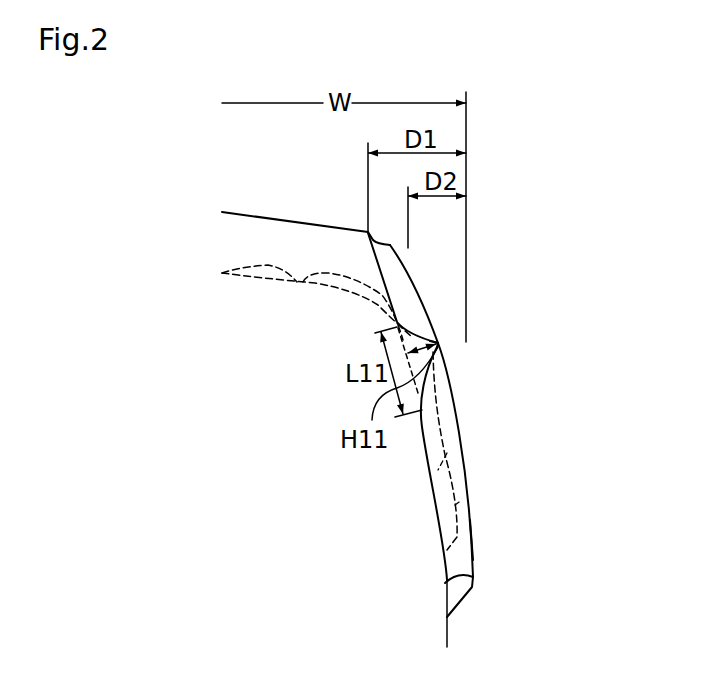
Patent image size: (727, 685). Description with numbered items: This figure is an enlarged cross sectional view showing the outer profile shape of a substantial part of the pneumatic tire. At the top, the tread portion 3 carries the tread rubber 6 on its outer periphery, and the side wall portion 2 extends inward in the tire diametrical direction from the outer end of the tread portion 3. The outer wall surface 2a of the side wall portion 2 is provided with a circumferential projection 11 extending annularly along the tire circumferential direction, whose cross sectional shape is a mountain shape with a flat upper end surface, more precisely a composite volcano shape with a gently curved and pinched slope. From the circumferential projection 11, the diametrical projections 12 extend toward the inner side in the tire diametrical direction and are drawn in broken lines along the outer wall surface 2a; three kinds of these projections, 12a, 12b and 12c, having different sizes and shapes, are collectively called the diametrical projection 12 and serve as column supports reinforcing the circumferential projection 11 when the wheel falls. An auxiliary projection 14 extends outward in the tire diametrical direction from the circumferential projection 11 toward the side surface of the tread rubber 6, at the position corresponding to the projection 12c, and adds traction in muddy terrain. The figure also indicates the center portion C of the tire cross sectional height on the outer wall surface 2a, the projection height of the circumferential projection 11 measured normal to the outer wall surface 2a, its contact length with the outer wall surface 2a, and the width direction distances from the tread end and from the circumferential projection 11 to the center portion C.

The side wall portion 2 is at (538, 385).
The outer wall surface 2a is at (473, 578).
The tread portion 3 is at (266, 200).
The tread rubber 6 is at (318, 232).
The circumferential projection 11 is at (438, 345).
The diametrical projection 12 is at (520, 463).
The diametrical projection 12a is at (473, 548).
The diametrical projection 12b is at (462, 503).
The diametrical projection 12c is at (460, 447).
The auxiliary projection 14 is at (413, 290).
The center portion C is at (450, 631).